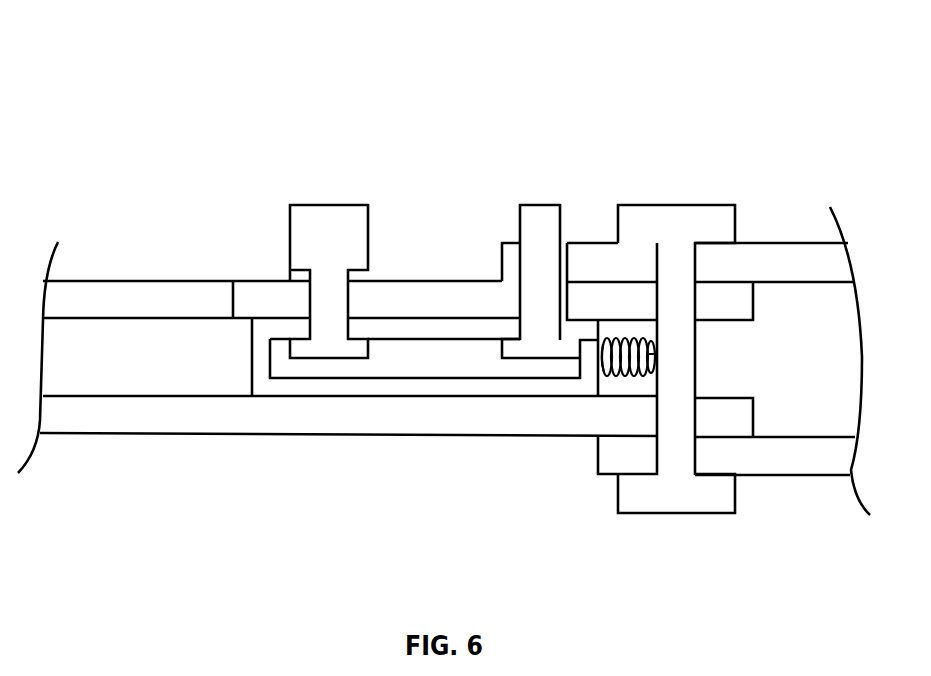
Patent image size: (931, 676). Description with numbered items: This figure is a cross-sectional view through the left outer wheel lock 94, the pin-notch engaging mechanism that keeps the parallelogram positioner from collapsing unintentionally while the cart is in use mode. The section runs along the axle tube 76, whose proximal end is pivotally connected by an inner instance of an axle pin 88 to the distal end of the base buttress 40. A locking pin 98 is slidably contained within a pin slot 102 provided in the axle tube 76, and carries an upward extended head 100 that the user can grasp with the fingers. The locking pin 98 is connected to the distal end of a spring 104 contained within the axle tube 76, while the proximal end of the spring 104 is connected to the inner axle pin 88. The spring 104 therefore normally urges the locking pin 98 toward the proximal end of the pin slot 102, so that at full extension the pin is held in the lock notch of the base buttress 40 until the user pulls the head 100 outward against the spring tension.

The outer wheel lock 94 is at (483, 93).
The axle tube 76 is at (175, 414).
The pin slot 102 is at (252, 300).
The head 100 is at (328, 224).
The locking pin 98 is at (542, 225).
The spring 104 is at (627, 372).
The axle pin 88 is at (677, 225).
The base buttress 40 is at (831, 455).